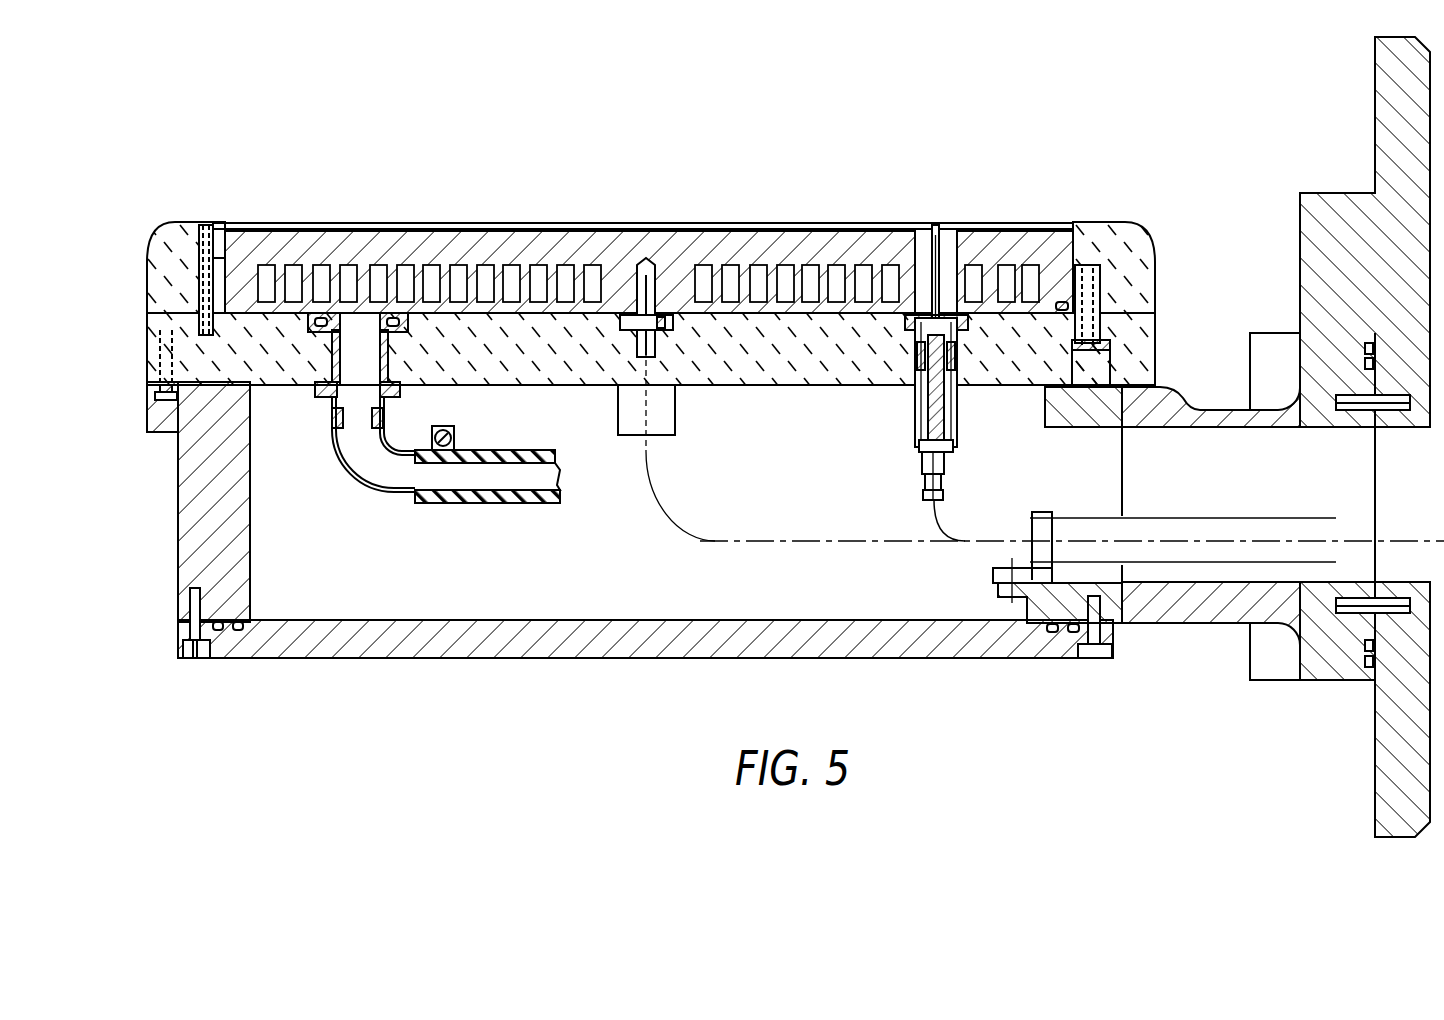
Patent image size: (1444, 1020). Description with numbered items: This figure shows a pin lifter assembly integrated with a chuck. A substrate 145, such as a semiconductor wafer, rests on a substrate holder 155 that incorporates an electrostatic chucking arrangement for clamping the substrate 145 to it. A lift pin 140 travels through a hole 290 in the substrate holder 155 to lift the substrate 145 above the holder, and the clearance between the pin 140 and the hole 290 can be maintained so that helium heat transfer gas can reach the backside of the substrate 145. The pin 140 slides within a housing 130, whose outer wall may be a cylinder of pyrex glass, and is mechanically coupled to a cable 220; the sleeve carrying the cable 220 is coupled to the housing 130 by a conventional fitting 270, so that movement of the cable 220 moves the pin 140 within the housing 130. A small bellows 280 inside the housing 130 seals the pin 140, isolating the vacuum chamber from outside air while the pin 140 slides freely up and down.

The housing 130 is at (960, 410).
The pin 140 is at (968, 233).
The substrate 145 is at (655, 225).
The substrate holder 155 is at (614, 238).
The cable 220 is at (942, 521).
The fitting 270 is at (945, 476).
The bellows 280 is at (917, 360).
The holes 290 is at (920, 233).